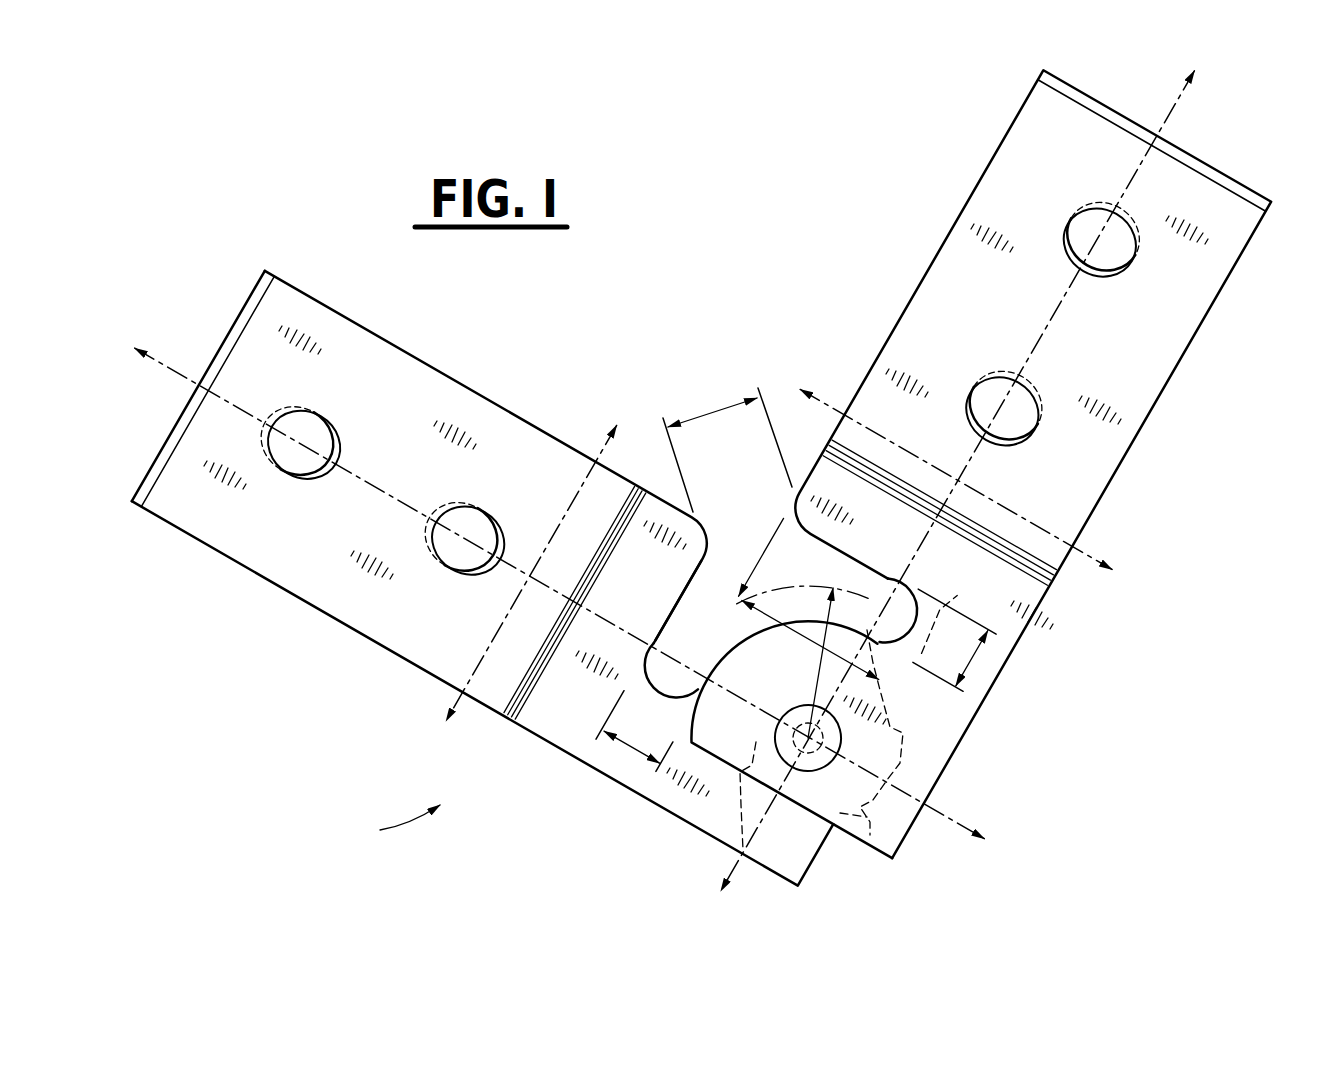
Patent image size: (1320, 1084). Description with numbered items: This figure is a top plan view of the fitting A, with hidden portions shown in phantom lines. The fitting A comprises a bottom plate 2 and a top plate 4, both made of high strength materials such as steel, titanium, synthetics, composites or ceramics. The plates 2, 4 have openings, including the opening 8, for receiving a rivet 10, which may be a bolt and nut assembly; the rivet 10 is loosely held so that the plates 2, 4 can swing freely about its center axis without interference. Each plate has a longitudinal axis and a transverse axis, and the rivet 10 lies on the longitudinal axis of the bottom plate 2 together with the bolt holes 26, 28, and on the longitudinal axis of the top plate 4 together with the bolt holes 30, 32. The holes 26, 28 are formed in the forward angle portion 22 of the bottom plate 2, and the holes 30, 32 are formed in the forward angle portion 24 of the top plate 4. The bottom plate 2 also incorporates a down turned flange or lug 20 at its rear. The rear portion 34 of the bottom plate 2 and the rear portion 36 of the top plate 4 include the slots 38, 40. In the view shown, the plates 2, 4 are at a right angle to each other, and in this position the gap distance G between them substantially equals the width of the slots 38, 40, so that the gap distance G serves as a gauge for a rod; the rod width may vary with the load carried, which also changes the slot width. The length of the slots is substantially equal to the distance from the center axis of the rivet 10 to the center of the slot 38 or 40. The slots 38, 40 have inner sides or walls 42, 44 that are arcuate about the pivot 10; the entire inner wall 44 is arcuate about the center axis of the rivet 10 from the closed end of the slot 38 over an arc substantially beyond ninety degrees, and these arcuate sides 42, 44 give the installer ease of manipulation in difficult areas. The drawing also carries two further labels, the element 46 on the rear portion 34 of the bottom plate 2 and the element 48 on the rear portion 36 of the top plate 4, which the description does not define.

The bottom plate 2 is at (484, 392).
The top plate 4 is at (886, 336).
The opening 8 is at (740, 779).
The rivet 10 is at (800, 766).
The down turned flange or lug 20 is at (866, 836).
The forward angle portion 22 is at (300, 548).
The forward angle portion 24 is at (1078, 390).
The hole 26 is at (457, 566).
The hole 28 is at (330, 432).
The hole 30 is at (986, 386).
The hole 32 is at (1111, 263).
The rear portion 34 is at (590, 700).
The rear portion 36 is at (918, 723).
The slot 38 is at (693, 645).
The slot 40 is at (870, 582).
The inner side or wall 42 is at (950, 603).
The inner side or wall 44 is at (727, 650).
The step edge 46 is at (683, 607).
The second stop projection 48 is at (882, 566).
The gap distance G is at (708, 402).
The fitting A is at (395, 826).